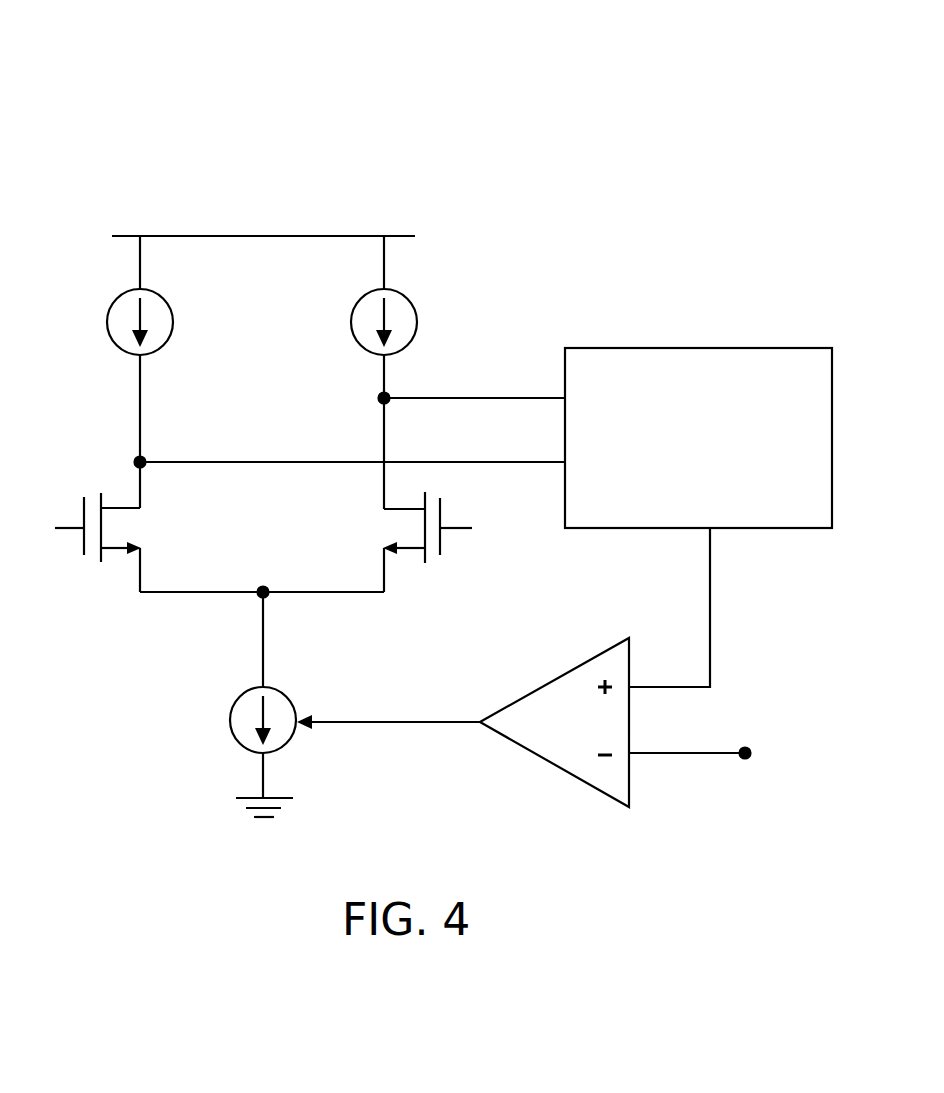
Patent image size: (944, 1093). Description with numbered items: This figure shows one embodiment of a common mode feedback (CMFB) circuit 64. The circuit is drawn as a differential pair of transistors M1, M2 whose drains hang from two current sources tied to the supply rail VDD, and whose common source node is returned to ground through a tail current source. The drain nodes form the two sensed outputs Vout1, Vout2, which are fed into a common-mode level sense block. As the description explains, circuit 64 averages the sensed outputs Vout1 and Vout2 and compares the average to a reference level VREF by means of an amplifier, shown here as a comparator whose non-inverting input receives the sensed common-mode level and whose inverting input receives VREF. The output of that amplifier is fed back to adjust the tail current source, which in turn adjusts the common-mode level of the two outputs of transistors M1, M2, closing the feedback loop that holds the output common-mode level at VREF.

The common mode feedback circuit 64 is at (443, 415).
The transistor M1 is at (127, 527).
The transistor M2 is at (399, 527).
The first sensed output Vout1 is at (313, 452).
The second sensed output Vout2 is at (435, 389).
The supply voltage rail VDD is at (300, 238).
The reference level VREF is at (729, 756).